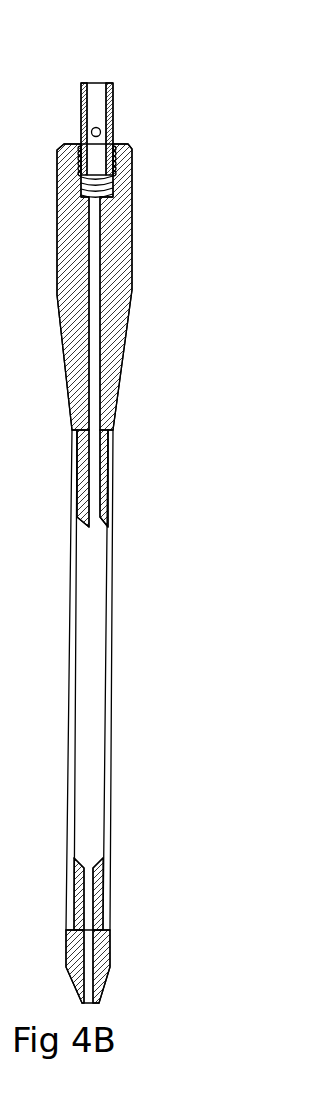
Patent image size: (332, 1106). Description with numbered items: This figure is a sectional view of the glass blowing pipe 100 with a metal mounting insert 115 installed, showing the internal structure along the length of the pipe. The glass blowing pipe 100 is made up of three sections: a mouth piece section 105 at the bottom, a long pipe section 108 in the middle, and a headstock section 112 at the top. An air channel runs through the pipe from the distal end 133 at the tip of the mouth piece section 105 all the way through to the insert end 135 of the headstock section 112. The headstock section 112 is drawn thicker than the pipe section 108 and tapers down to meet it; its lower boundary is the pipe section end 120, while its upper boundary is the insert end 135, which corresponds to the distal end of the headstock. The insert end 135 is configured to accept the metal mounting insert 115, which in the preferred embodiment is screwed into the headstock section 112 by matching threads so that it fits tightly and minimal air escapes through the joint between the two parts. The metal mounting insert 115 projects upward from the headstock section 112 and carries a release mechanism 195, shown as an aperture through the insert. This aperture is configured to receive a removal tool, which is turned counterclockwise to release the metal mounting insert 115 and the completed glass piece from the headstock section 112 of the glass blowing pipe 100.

The glass blowing pipe 100 is at (173, 618).
The mouth piece section 105 is at (100, 942).
The pipe section 108 is at (90, 744).
The headstock section 112 is at (117, 258).
The metal mounting insert 115 is at (97, 98).
The pipe section end 120 is at (114, 432).
The distal end 133 is at (92, 1003).
The insert end 135 is at (123, 143).
The release mechanism 195 is at (100, 130).